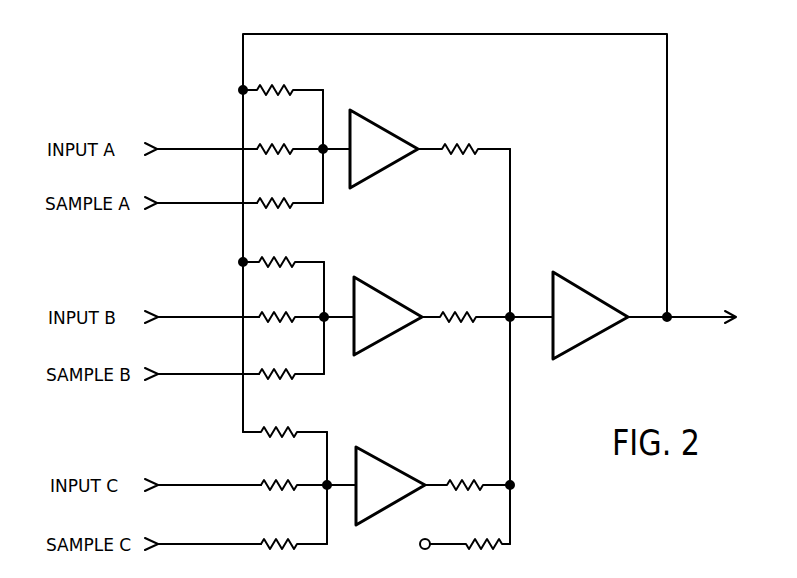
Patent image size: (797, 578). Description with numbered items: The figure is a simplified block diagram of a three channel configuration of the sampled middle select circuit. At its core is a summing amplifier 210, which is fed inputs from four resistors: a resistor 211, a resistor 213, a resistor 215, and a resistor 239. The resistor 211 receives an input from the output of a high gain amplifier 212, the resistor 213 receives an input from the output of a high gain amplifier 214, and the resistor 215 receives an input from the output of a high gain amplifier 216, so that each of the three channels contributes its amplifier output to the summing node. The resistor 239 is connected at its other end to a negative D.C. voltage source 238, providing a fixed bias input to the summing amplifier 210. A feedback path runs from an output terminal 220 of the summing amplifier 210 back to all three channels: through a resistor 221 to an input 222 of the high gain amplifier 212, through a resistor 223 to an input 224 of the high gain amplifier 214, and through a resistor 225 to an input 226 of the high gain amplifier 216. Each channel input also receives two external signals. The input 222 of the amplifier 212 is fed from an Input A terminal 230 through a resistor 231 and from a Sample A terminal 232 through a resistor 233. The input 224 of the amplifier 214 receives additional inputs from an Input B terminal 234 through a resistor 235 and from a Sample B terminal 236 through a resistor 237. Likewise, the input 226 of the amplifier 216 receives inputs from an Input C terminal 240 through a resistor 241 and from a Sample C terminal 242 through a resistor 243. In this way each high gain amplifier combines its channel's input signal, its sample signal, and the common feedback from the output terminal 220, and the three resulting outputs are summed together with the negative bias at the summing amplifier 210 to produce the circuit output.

The summing amplifier 210 is at (590, 294).
The resistor 211 is at (458, 146).
The high gain amplifier 212 is at (386, 130).
The resistor 213 is at (455, 314).
The high gain amplifier 214 is at (390, 298).
The resistor 215 is at (457, 482).
The high gain amplifier 216 is at (393, 467).
The output terminal 220 is at (670, 313).
The resistor 221 is at (272, 86).
The input 222 is at (344, 147).
The resistor 223 is at (277, 258).
The input 224 is at (348, 315).
The resistor 225 is at (276, 428).
The input 226 is at (350, 483).
The Input A terminal 230 is at (165, 147).
The resistor 231 is at (272, 145).
The Sample A terminal 232 is at (165, 201).
The resistor 233 is at (272, 199).
The Input B terminal 234 is at (168, 315).
The resistor 235 is at (277, 313).
The Sample B terminal 236 is at (168, 372).
The resistor 237 is at (277, 370).
The negative D.C. voltage source 238 is at (419, 541).
The resistor 239 is at (468, 541).
The Input C terminal 240 is at (168, 483).
The resistor 241 is at (274, 482).
The Sample C terminal 242 is at (168, 542).
The resistor 243 is at (274, 540).